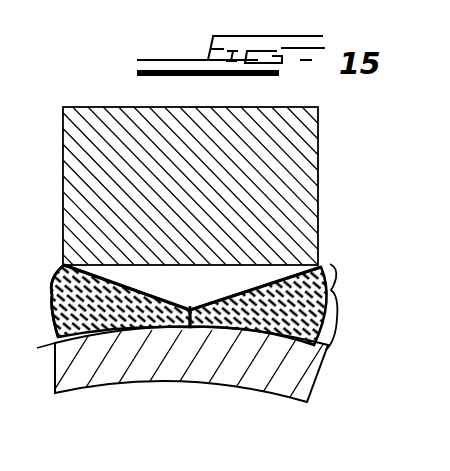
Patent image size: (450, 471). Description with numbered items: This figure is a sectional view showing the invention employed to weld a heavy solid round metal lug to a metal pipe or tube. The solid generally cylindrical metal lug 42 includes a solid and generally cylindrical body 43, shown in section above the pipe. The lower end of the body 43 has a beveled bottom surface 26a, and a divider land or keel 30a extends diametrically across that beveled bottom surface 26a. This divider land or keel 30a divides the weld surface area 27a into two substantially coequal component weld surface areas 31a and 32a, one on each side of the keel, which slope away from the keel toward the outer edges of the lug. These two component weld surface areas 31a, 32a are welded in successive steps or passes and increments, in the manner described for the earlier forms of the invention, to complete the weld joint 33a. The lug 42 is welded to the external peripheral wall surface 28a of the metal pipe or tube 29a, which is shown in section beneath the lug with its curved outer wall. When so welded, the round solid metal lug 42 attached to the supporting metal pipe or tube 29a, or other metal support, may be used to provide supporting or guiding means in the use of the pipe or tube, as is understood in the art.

The solid generally cylindrical metal lug 42 is at (322, 136).
The solid and generally cylindrical body 43 is at (312, 193).
The beveled bottom surface 26a is at (150, 292).
The weld surface area 27a is at (334, 290).
The external peripheral wall surface 28a is at (338, 313).
The metal pipe or tube 29a is at (297, 363).
The divider land or keel 30a is at (188, 320).
The component weld surface area 31a is at (122, 280).
The component weld surface area 32a is at (252, 283).
The weld joint 33a is at (53, 290).